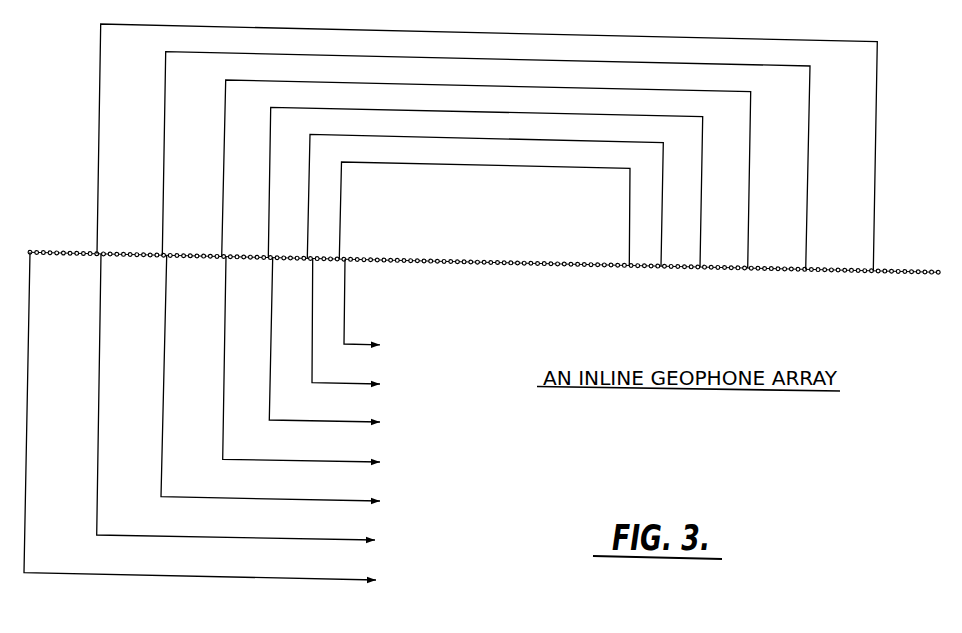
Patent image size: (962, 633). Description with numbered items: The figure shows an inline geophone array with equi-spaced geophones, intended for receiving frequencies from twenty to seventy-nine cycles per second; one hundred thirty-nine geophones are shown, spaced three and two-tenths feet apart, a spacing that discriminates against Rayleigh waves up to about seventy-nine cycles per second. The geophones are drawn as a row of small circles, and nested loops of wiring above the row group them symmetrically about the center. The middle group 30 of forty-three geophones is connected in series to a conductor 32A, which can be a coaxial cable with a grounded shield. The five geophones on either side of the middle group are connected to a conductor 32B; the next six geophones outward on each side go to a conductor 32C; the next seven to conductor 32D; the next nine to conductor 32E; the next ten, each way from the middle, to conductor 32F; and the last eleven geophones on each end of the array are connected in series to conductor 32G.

The middle group 30 is at (567, 267).
The conductor 32A is at (367, 335).
The conductor 32B is at (365, 382).
The conductor 32C is at (365, 420).
The conductor 32D is at (355, 459).
The conductor 32E is at (355, 498).
The conductor 32F is at (357, 537).
The conductor 32G is at (357, 577).